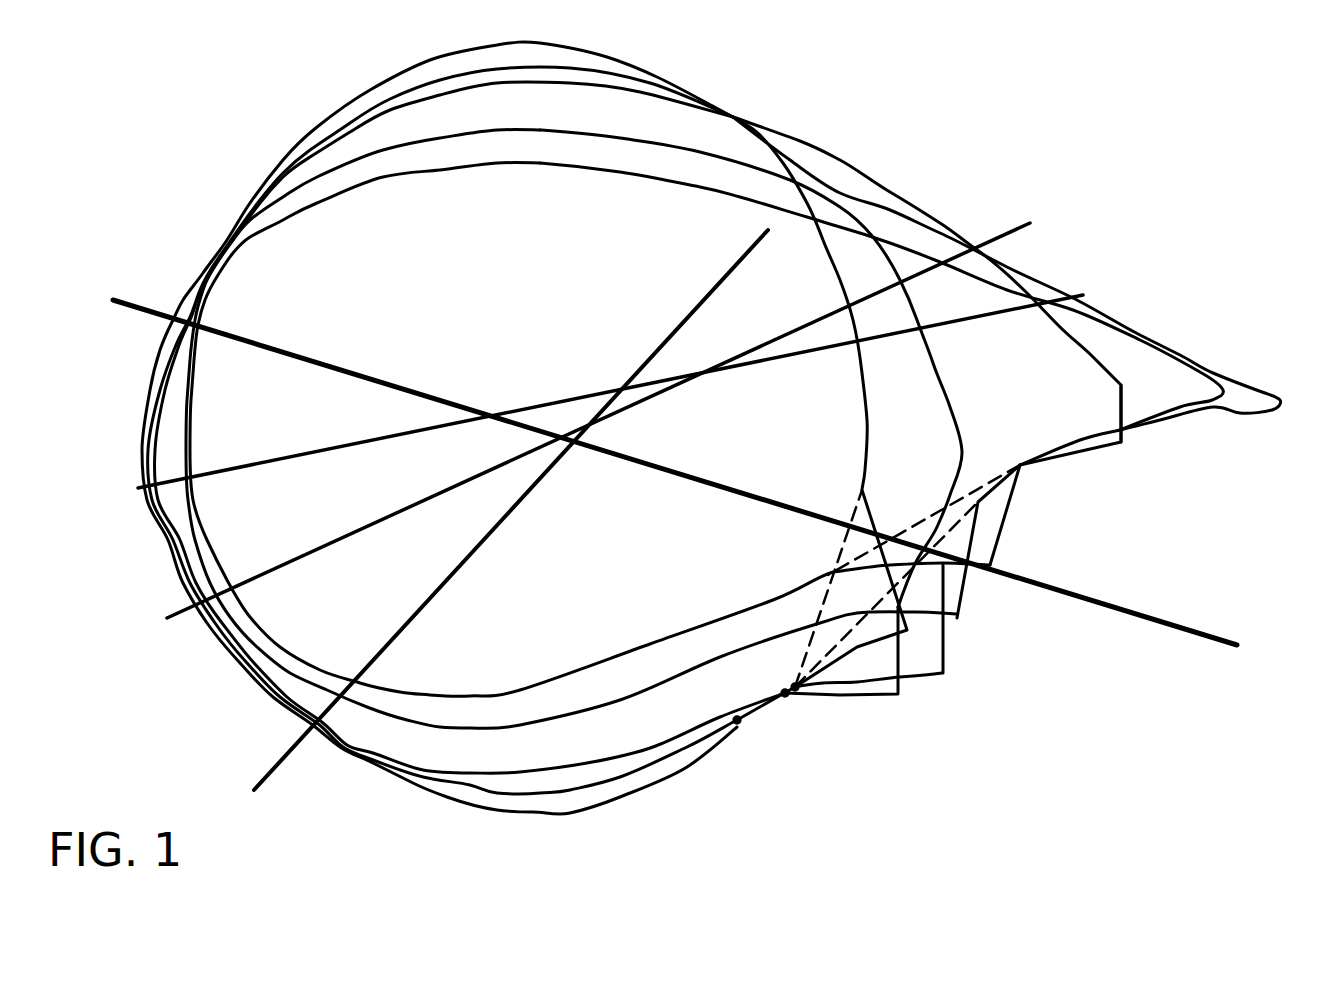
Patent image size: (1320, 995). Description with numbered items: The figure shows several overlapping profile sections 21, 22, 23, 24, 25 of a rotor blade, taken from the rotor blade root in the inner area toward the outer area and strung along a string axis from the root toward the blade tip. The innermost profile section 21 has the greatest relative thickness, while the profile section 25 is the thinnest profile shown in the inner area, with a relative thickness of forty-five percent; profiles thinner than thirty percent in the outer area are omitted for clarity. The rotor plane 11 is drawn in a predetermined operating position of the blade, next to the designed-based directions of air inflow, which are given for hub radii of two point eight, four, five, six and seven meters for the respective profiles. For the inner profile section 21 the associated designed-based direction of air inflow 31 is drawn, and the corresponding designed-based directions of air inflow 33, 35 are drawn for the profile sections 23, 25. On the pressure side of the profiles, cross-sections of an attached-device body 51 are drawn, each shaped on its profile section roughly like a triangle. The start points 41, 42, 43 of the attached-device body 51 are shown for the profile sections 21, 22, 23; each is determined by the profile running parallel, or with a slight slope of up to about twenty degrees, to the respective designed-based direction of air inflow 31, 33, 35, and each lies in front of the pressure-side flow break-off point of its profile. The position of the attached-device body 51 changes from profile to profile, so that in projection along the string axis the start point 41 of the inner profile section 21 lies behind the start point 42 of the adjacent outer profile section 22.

The rotor plane 11 is at (1181, 630).
The profile section 21 is at (645, 792).
The profile section 22 is at (665, 760).
The profile section 23 is at (582, 768).
The profile section 24 is at (500, 730).
The profile section 25 is at (433, 697).
The designed-based direction of air inflow 31 is at (697, 302).
The designed-based direction of air inflow 33 is at (788, 333).
The designed-based direction of air inflow 35 is at (818, 348).
The start point 41 is at (803, 695).
The start point 42 is at (740, 725).
The start point 43 is at (788, 695).
The attached-device body 51 is at (987, 550).